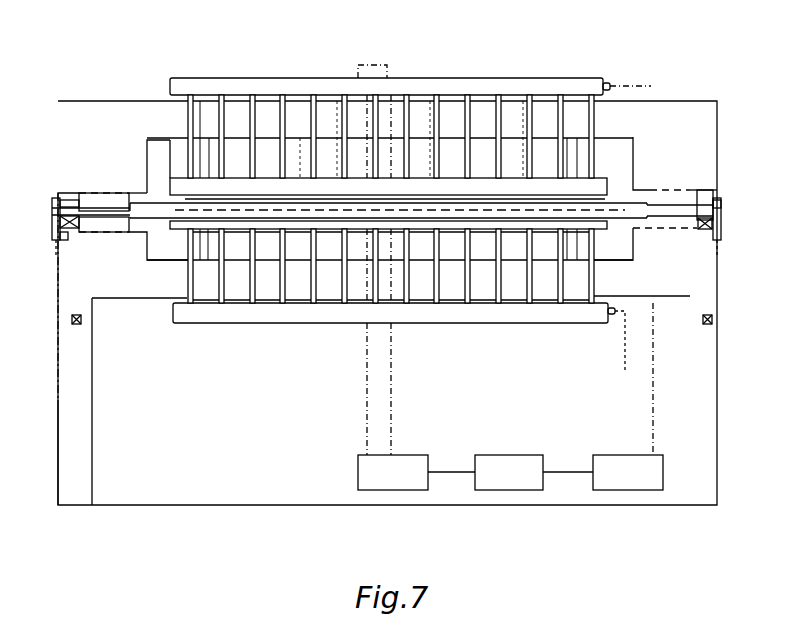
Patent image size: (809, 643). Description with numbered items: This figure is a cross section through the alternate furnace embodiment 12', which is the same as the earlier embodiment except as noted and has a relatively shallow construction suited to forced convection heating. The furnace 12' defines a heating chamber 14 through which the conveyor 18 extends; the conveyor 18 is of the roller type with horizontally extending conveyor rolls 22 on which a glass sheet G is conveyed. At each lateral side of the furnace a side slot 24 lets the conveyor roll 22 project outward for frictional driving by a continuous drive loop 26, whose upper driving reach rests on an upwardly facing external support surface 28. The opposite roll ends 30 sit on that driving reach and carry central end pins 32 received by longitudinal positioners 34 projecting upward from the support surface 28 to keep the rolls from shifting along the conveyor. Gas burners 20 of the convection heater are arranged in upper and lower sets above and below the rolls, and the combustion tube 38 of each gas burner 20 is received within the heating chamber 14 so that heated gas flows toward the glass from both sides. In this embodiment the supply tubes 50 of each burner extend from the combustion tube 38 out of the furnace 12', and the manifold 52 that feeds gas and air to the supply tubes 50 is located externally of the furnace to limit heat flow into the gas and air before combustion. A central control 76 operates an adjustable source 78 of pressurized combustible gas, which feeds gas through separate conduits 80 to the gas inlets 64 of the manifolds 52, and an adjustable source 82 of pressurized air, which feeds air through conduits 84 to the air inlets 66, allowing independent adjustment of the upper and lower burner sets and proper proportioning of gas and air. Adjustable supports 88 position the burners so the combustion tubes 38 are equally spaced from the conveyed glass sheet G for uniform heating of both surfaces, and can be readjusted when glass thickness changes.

The alternate furnace embodiment 12' is at (393, 282).
The heating chamber 14 is at (158, 141).
The conveyor 18 is at (160, 195).
The glass sheet G is at (186, 178).
The gas burner 20 is at (612, 116).
The conveyor roll 22 is at (140, 228).
The side slot 24 is at (75, 195).
The drive loop 26 is at (64, 238).
The external support surface 28 is at (68, 230).
The roll end 30 is at (66, 204).
The central end pin 32 is at (54, 217).
The longitudinal positioner 34 is at (60, 243).
The combustion tube 38 is at (608, 178).
The supply tube 50 is at (272, 113).
The manifold 52 is at (489, 78).
The gas inlet 64 is at (608, 82).
The air inlet 66 is at (390, 77).
The central control 76 is at (533, 492).
The source of pressurized combustible gas 78 is at (650, 492).
The gas conduit 80 is at (651, 86).
The source of pressurized air 82 is at (417, 492).
The air conduit 84 is at (358, 66).
The adjustable support 88 is at (196, 81).